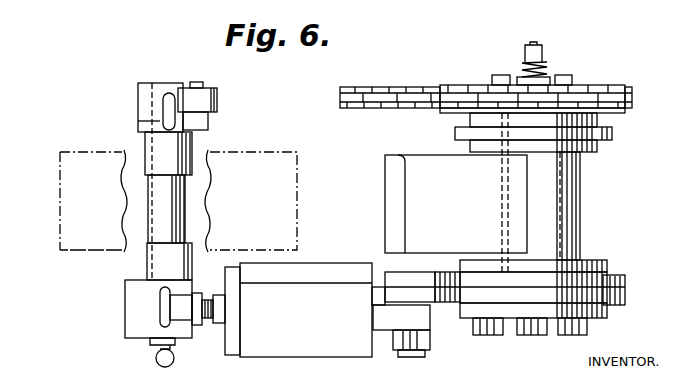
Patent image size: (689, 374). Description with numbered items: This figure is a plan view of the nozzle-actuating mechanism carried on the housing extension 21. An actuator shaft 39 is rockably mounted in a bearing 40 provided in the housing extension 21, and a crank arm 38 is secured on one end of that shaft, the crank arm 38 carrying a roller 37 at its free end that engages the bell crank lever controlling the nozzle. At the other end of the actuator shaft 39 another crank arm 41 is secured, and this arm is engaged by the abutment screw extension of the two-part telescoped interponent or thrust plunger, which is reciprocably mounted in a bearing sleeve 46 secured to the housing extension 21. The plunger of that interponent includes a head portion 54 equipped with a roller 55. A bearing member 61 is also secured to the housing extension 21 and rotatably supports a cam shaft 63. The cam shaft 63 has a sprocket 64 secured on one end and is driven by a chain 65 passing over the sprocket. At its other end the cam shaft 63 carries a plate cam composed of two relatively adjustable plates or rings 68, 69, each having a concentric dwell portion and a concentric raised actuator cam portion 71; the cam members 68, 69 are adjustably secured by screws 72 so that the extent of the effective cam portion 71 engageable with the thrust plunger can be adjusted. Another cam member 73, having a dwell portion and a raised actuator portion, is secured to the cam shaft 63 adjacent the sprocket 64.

The housing extension 21 is at (60, 190).
The roller 37 is at (217, 100).
The crank arm 38 is at (155, 121).
The actuator shaft 39 is at (172, 200).
The bearing 40 is at (190, 147).
The crank arm 41 is at (180, 312).
The bearing sleeve 46 is at (307, 345).
The head portion 54 is at (420, 318).
The roller 55 is at (421, 277).
The bearing member 61 is at (570, 233).
The cam shaft 63 is at (547, 196).
The sprocket 64 is at (620, 114).
The chain 65 is at (406, 86).
The cam plate 68 is at (540, 295).
The cam plate 69 is at (515, 277).
The actuator cam portion 71 is at (625, 296).
The screws 72 is at (560, 336).
The cam member 73 is at (612, 138).